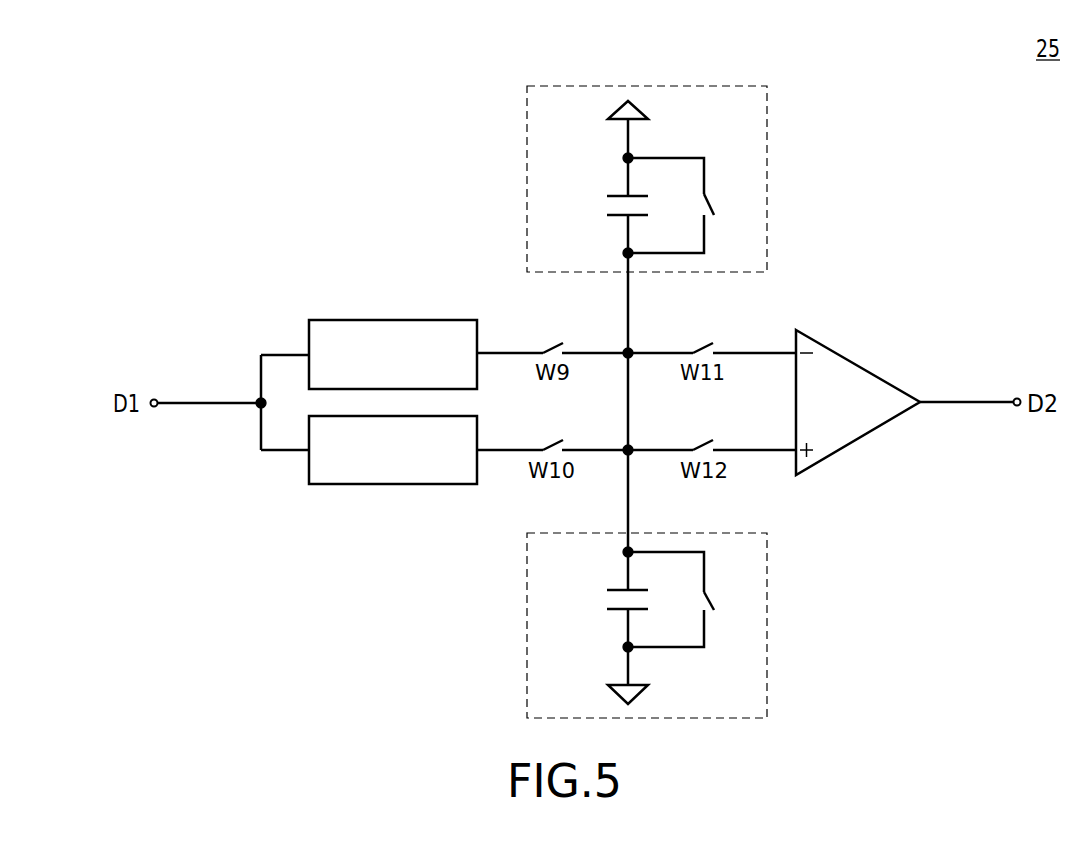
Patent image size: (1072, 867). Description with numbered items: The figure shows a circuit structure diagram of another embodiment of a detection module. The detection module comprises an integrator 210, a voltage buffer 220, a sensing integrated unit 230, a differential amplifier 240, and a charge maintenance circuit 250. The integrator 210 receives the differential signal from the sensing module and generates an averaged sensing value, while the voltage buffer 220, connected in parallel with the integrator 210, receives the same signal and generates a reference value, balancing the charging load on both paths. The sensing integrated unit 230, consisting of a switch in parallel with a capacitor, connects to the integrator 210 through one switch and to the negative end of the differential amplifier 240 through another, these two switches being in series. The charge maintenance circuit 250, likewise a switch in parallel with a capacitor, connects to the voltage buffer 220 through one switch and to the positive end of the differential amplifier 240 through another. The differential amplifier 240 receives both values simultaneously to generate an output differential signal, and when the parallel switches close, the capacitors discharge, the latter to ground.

The integrator 210 is at (318, 320).
The voltage buffer 220 is at (318, 484).
The sensing integrated unit 230 is at (767, 175).
The differential amplifier 240 is at (858, 365).
The charge maintenance circuit 250 is at (767, 620).